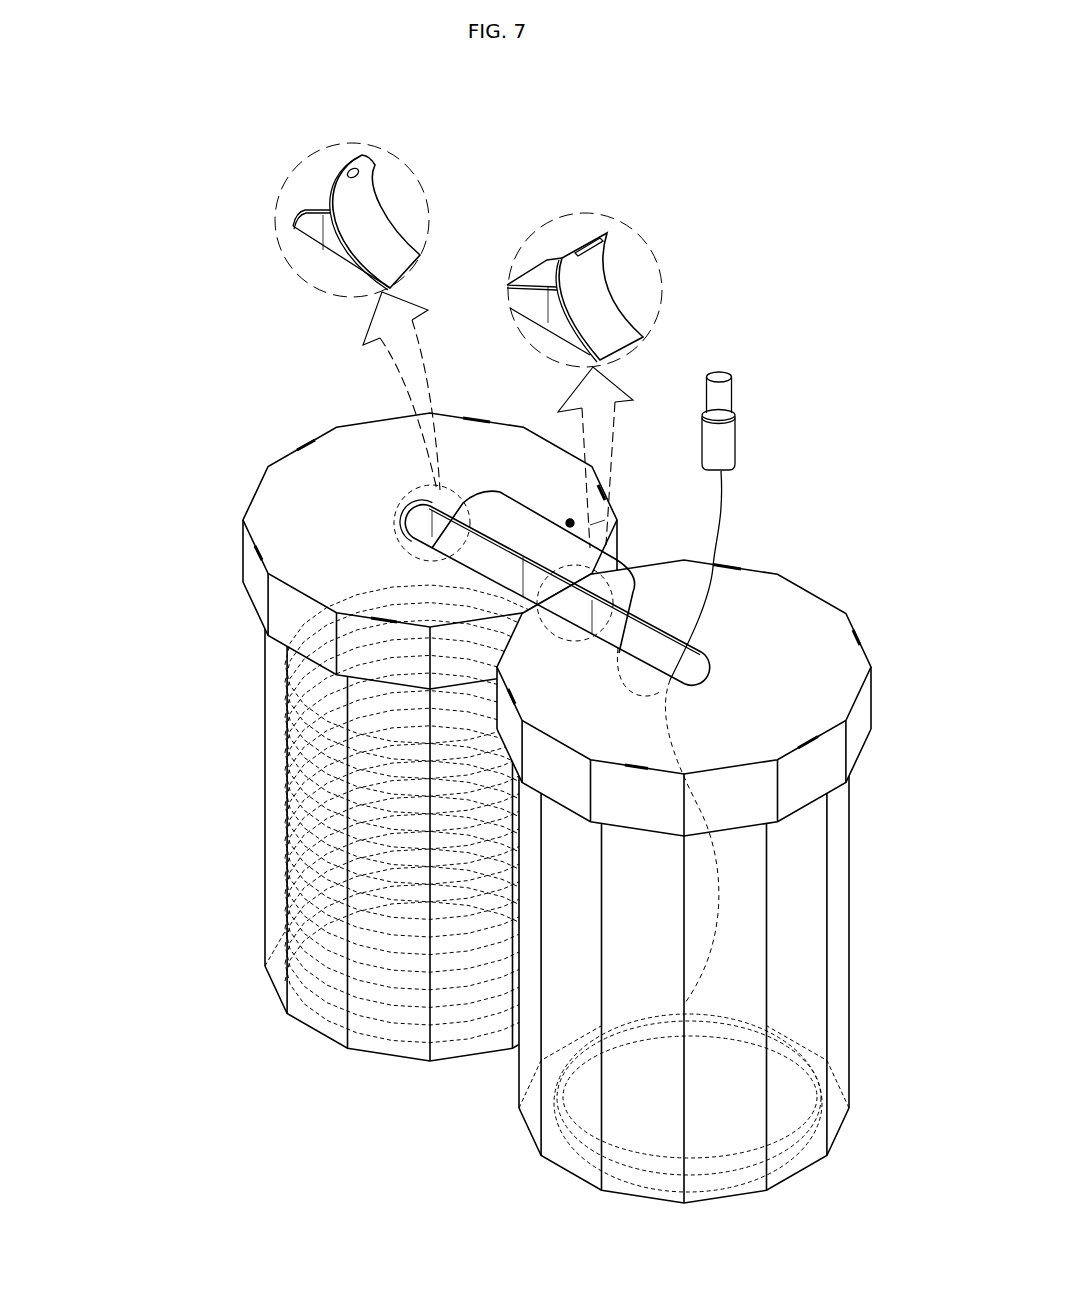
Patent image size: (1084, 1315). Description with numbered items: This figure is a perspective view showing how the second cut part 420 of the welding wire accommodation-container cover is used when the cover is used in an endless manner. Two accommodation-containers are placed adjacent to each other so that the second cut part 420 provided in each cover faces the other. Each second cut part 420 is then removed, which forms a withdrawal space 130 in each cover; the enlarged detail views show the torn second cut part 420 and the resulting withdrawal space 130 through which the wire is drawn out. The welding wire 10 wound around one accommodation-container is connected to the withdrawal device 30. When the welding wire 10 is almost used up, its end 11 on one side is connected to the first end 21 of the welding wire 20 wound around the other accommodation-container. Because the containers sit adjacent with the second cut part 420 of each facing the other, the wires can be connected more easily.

The welding wire 10 is at (684, 808).
The end of the welding wire 11 is at (717, 567).
The welding wire 20 is at (371, 737).
The first end of the welding wire 21 is at (500, 492).
The withdrawal device 30 is at (733, 397).
The withdrawal space 130 is at (322, 226).
The second cut part 420 is at (527, 220).